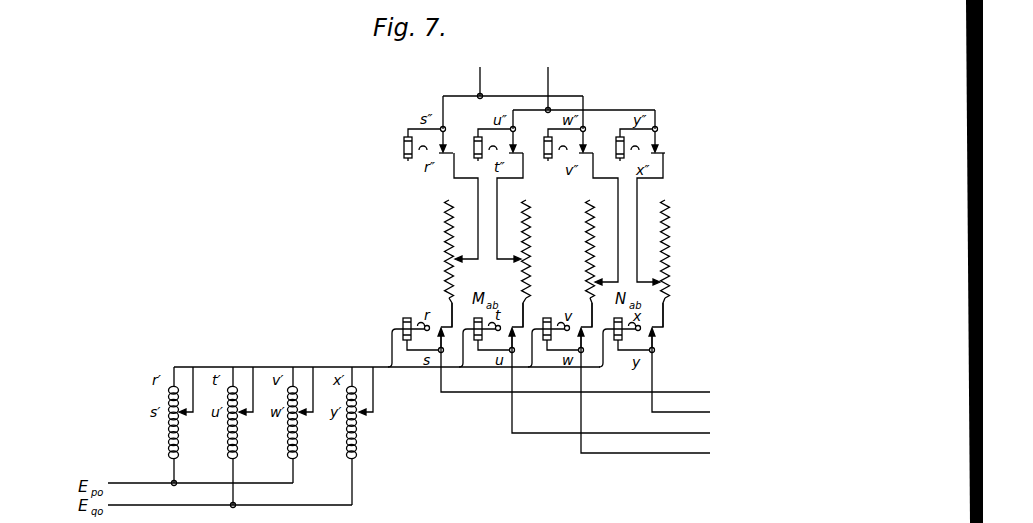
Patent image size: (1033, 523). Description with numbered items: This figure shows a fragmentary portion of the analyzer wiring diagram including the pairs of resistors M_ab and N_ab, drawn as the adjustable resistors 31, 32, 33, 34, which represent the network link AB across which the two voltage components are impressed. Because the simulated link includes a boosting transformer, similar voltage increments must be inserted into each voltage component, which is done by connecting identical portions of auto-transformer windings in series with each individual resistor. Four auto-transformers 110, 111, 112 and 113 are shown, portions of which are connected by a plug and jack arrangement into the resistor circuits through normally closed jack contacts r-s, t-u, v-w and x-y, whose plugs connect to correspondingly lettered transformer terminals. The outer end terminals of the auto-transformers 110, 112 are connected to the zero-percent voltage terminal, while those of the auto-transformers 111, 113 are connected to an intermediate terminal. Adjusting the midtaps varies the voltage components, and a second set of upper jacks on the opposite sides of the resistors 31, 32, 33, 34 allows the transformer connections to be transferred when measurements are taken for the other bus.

The M resistor 31 is at (445, 236).
The N resistor 32 is at (528, 241).
The M resistor 33 is at (587, 266).
The N resistor 34 is at (669, 257).
The auto-transformer 110 is at (168, 432).
The auto-transformer 111 is at (228, 432).
The auto-transformer 112 is at (288, 432).
The auto-transformer 113 is at (347, 432).